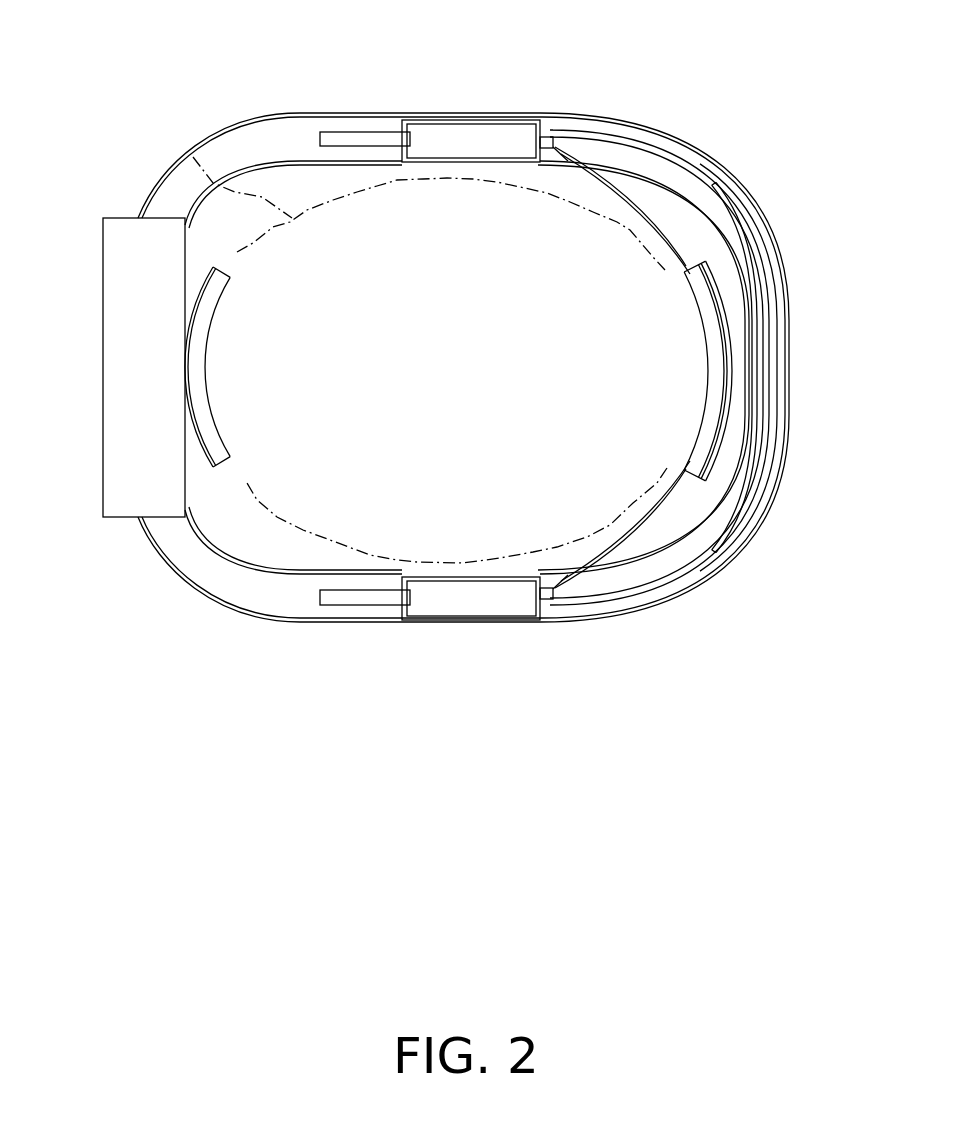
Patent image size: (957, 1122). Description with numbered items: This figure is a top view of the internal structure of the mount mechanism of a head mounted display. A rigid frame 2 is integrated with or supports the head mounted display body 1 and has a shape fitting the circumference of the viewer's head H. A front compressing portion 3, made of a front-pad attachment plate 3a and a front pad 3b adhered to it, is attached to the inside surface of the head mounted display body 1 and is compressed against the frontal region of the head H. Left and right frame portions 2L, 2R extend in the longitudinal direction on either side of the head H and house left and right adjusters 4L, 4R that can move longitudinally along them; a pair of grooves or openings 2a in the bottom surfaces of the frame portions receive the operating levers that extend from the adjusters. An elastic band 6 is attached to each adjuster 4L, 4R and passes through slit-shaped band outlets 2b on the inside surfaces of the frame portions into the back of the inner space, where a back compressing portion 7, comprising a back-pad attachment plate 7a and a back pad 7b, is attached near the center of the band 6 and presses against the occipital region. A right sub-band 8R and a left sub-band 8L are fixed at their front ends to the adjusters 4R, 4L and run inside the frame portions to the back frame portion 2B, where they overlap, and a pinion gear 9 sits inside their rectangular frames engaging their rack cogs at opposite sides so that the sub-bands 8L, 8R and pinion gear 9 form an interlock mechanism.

The head mounted display body 1 is at (142, 440).
The frame 2 is at (212, 603).
The right frame portion 2R is at (483, 115).
The left frame portion 2L is at (477, 620).
The back frame portion 2B is at (788, 350).
The grooves or openings 2a is at (338, 139).
The band outlets 2b is at (540, 580).
The front compressing portion 3 is at (281, 367).
The front-pad attachment plate 3a is at (202, 293).
The front pad 3b is at (200, 403).
The right adjuster 4R is at (440, 133).
The left adjuster 4L is at (442, 597).
The elastic band 6 is at (643, 217).
The back compressing portion 7 is at (628, 371).
The back-pad attachment plate 7a is at (700, 285).
The back pad 7b is at (702, 430).
The right sub-band 8R is at (672, 173).
The left sub-band 8L is at (673, 582).
The pinion gear 9 is at (780, 333).
The head H is at (187, 138).